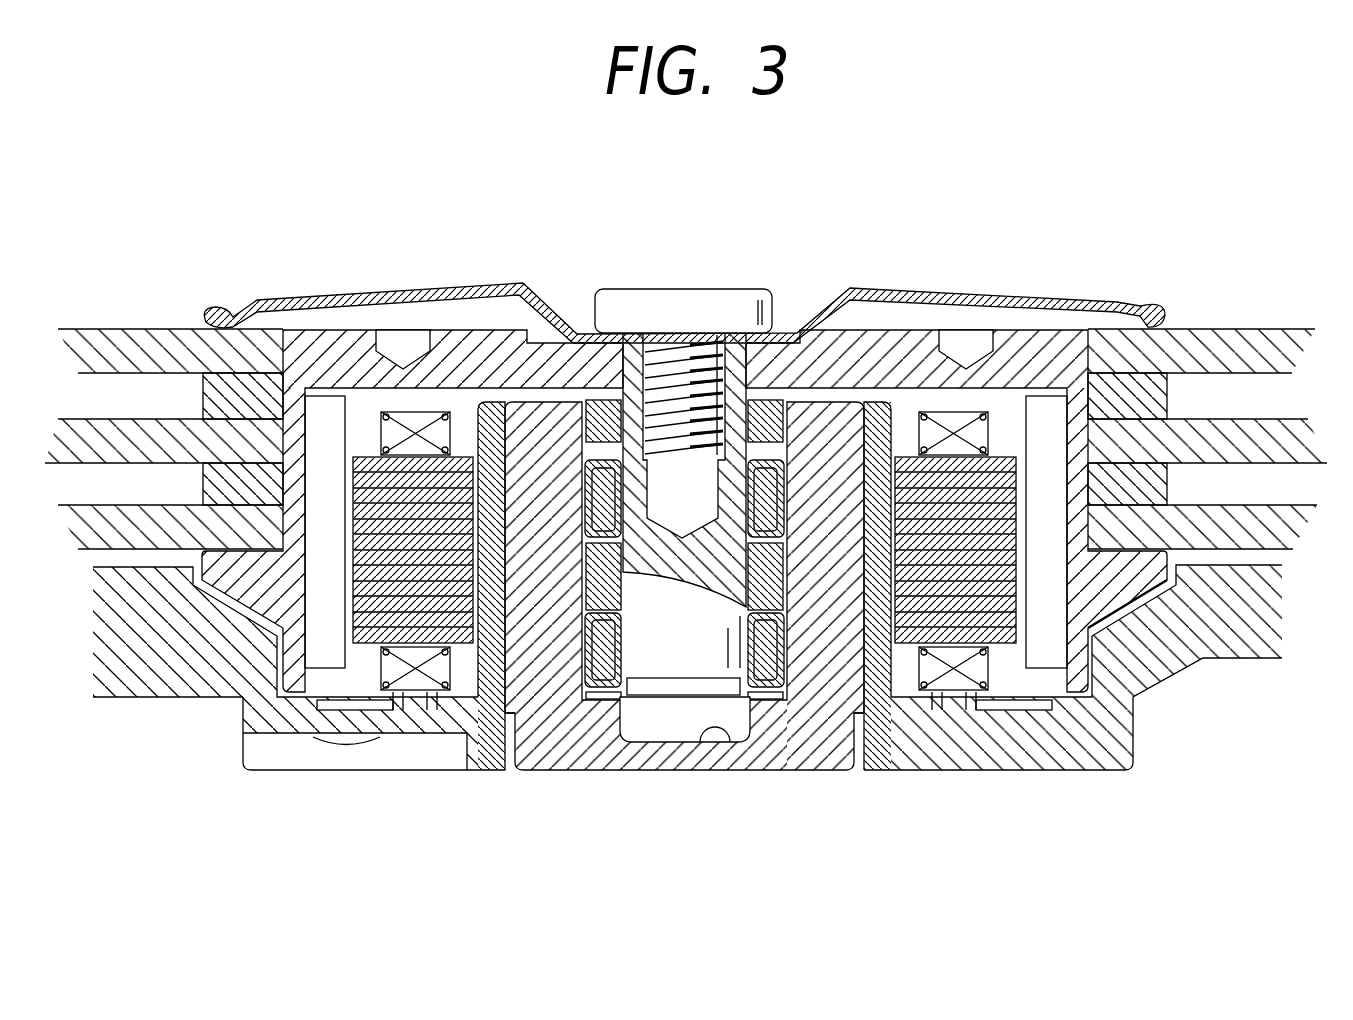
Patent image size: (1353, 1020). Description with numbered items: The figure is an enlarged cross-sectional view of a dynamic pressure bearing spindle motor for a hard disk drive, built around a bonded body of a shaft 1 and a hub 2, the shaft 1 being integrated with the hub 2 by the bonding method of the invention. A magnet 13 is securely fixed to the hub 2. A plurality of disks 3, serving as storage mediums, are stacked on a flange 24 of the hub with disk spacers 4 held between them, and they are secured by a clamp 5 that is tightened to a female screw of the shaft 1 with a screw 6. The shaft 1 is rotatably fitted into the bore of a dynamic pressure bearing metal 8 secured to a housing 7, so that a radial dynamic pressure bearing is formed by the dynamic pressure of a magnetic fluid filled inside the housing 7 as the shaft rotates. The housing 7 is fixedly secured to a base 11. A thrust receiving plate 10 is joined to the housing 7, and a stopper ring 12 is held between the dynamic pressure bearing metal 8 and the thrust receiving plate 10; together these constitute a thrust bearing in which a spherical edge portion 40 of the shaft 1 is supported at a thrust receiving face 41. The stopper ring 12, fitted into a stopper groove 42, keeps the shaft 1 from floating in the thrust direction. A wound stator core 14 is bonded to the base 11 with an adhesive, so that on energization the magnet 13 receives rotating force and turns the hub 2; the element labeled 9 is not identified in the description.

The shaft 1 is at (687, 540).
The hub 2 is at (465, 345).
The disks 3 is at (1203, 345).
The disk spacers 4 is at (1110, 383).
The clamp 5 is at (300, 292).
The screw 6 is at (655, 300).
The housing 7 is at (848, 418).
The dynamic pressure bearing metal 8 is at (540, 575).
The bearing 9 is at (765, 400).
The thrust receiving plate 10 is at (652, 760).
The base 11 is at (1095, 737).
The stopper ring 12 is at (558, 727).
The magnet 13 is at (1040, 415).
The wound stator core 14 is at (940, 615).
The flange 24 is at (1143, 572).
The spherical edge portion 40 is at (690, 750).
The thrust receiving face 41 is at (722, 722).
The stopper groove 42 is at (612, 700).